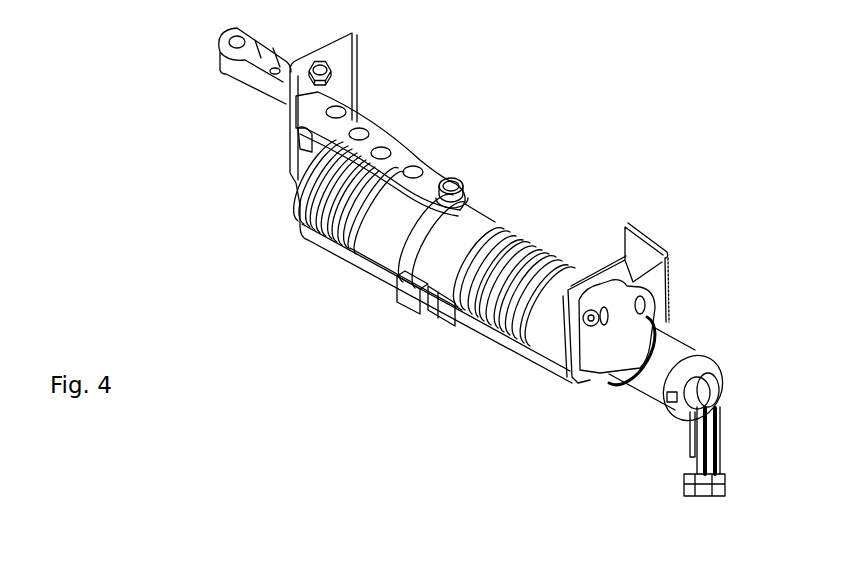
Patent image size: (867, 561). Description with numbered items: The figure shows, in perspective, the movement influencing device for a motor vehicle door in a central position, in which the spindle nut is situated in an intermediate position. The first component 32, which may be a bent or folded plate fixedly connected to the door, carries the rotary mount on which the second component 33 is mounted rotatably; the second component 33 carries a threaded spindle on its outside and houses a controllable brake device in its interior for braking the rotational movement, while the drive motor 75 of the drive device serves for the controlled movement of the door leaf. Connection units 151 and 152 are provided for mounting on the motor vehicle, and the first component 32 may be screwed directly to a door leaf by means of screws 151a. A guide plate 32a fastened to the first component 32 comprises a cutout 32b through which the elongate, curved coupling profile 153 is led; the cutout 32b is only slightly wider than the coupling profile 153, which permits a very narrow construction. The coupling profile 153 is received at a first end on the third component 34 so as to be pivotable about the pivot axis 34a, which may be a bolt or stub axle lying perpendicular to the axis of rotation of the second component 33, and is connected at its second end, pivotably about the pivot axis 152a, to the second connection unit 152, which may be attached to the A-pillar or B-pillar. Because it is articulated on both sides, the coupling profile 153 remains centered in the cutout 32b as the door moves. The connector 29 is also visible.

The first component 32 is at (312, 228).
The guide plate 32a is at (297, 96).
The cutout 32b is at (296, 137).
The second component 33 is at (540, 253).
The third component 34 is at (485, 220).
The pivot axis 34a is at (453, 182).
The connection unit 151 is at (345, 58).
The screws 151a is at (332, 72).
The second connection unit 152 is at (206, 28).
The pivot axis 152a is at (221, 47).
The coupling profile 153 is at (398, 157).
The drive motor 75 is at (682, 345).
The cable connector 29 is at (717, 428).